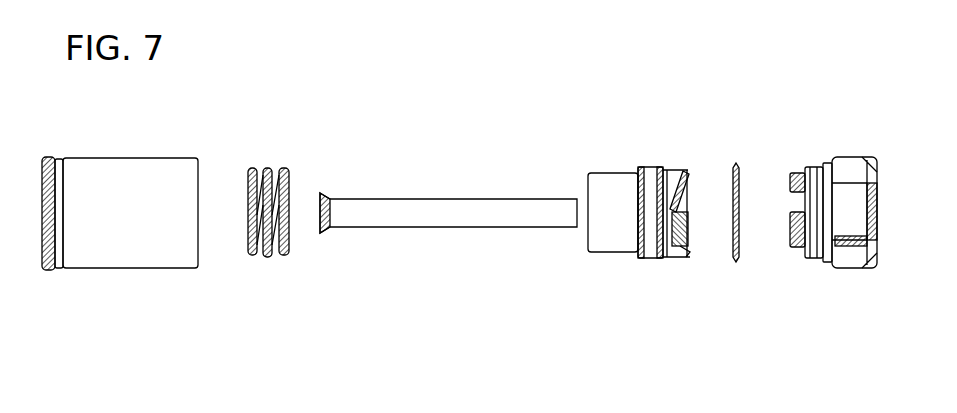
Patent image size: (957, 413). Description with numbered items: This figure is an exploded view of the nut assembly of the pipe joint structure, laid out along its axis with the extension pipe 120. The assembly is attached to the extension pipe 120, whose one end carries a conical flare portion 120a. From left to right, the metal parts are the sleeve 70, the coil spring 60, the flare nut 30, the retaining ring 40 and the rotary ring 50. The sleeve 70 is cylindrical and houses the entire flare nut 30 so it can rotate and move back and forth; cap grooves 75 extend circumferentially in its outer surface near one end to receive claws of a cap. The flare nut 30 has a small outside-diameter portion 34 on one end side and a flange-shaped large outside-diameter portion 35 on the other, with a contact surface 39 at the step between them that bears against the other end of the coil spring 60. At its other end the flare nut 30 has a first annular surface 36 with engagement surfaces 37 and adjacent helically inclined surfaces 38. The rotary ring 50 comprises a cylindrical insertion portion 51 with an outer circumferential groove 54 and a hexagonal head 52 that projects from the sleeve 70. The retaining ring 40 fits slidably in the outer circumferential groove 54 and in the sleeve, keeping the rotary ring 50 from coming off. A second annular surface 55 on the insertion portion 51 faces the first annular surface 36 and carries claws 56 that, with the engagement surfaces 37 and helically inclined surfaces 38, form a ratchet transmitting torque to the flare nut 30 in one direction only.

The sleeve 70 is at (128, 269).
The cap grooves 75 is at (58, 157).
The coil spring 60 is at (263, 257).
The extension pipe 120 is at (439, 267).
The flare portion 120a is at (323, 234).
The flare nut 30 is at (657, 225).
The small outside-diameter portion 34 is at (620, 173).
The large outside-diameter portion 35 is at (652, 167).
The first annular surface 36 is at (694, 198).
The engagement surfaces 37 is at (687, 220).
The helically inclined surfaces 38 is at (692, 242).
The contact surface 39 is at (632, 253).
The retaining ring 40 is at (736, 262).
The rotary ring 50 is at (822, 225).
The insertion portion 51 is at (825, 163).
The head 52 is at (857, 165).
The outer circumferential groove 54 is at (818, 258).
The second annular surface 55 is at (768, 186).
The claw 56 is at (790, 228).